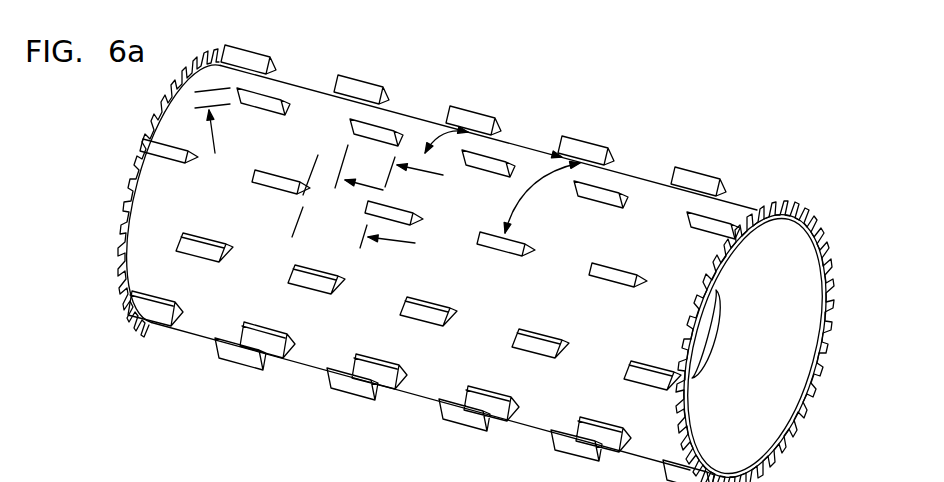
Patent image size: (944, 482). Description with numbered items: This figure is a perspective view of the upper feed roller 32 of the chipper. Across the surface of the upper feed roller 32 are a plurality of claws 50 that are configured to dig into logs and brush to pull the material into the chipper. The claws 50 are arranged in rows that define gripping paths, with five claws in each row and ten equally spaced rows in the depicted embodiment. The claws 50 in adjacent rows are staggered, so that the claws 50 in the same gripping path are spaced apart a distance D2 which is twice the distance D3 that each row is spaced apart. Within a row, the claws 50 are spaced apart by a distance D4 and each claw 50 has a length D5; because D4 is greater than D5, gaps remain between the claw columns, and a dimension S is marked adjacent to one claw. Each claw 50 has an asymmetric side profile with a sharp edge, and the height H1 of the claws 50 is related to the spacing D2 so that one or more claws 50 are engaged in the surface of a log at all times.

The upper feed roller 32 is at (648, 155).
The claws 50 is at (483, 115).
The height of the claws H1 is at (206, 88).
The claw length D5 is at (347, 147).
The cleat offset dimension S is at (312, 167).
The claw spacing distance D4 is at (298, 212).
The row spacing distance D3 is at (443, 130).
The gripping path claw spacing D2 is at (536, 188).